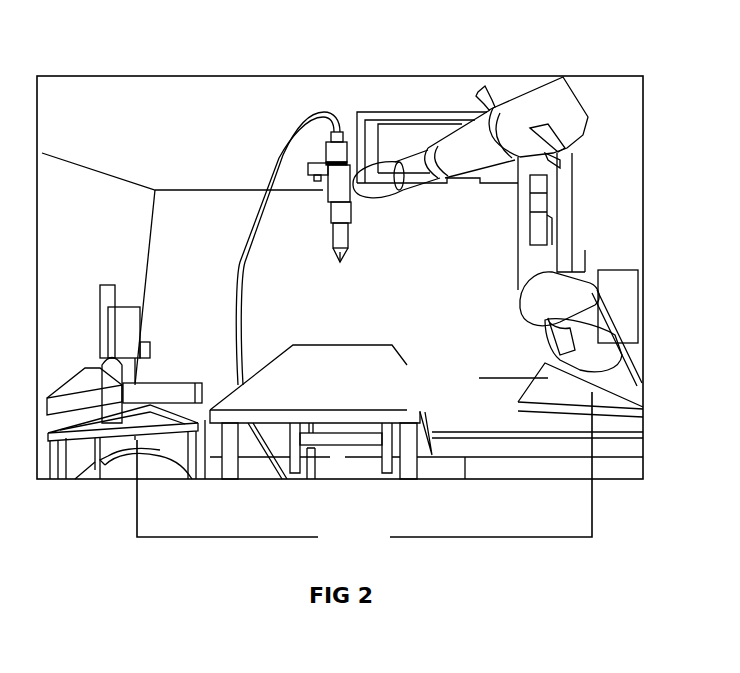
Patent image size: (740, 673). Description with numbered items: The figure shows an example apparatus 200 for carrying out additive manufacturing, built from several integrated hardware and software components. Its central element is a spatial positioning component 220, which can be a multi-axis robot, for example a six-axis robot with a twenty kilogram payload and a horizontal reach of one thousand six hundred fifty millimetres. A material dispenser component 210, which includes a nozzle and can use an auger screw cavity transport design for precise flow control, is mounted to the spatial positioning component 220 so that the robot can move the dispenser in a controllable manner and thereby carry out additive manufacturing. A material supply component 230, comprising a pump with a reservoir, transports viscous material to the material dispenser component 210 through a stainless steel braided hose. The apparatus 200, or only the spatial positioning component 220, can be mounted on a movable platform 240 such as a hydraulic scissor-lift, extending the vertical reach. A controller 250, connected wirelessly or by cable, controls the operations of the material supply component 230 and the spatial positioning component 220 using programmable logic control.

The apparatus 200 is at (237, 66).
The material dispenser component 210 is at (313, 165).
The spatial positioning component 220 is at (540, 256).
The material supply component 230 is at (143, 387).
The movable platform 240 is at (582, 425).
The controller 250 is at (364, 476).